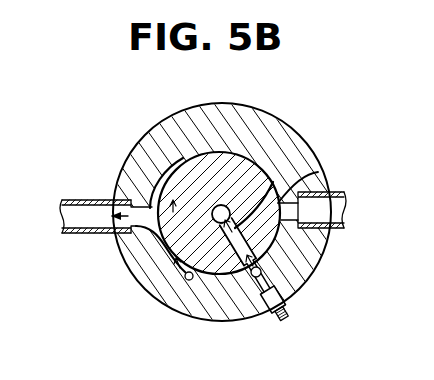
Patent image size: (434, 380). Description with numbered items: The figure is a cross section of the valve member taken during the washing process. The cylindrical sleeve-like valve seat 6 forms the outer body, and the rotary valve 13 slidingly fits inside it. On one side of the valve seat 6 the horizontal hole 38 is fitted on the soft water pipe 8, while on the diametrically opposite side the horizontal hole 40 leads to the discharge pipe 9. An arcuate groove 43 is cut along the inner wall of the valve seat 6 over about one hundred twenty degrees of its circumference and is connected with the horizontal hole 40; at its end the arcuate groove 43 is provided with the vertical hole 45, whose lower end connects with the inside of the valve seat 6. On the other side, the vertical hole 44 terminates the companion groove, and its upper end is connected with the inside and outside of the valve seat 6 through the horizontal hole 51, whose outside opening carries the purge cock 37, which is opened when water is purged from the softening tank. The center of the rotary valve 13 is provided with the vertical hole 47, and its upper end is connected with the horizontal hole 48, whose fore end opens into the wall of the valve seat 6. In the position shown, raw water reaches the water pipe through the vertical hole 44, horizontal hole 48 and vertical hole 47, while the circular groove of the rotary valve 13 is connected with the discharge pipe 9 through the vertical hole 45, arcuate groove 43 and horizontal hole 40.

The valve seat 6 is at (260, 128).
The rotary valve 13 is at (247, 163).
The arcuate groove 43 is at (160, 167).
The horizontal hole 40 is at (141, 231).
The discharge pipe 9 is at (92, 213).
The soft water pipe 8 is at (338, 209).
The vertical hole 44 is at (258, 272).
The horizontal hole 38 is at (318, 172).
The horizontal hole 48 is at (252, 193).
The vertical hole 47 is at (221, 204).
The horizontal hole 51 is at (256, 288).
The purge cock 37 is at (283, 298).
The vertical hole 45 is at (186, 277).